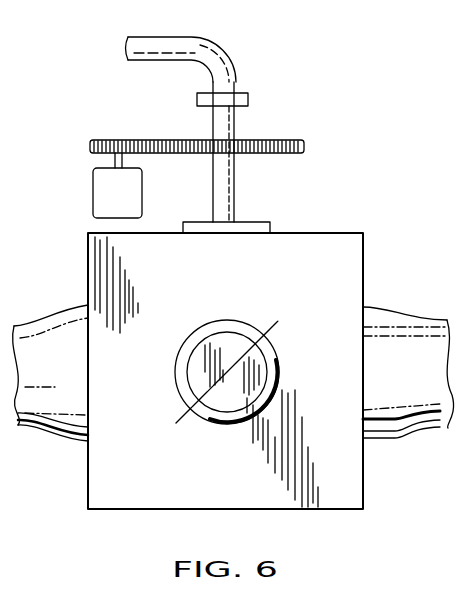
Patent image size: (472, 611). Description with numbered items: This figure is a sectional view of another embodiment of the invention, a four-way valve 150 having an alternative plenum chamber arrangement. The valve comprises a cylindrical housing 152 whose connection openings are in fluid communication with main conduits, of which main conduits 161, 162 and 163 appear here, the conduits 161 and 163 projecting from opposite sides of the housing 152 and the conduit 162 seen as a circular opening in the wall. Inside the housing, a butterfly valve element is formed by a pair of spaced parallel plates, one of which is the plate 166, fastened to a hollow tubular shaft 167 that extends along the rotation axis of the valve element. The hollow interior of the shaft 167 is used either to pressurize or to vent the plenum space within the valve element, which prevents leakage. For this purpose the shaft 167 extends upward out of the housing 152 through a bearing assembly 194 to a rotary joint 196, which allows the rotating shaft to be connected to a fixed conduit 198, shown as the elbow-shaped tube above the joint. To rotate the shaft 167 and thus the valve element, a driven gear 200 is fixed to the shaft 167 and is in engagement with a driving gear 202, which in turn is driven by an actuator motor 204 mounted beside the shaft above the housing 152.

The four-way valve 150 is at (333, 113).
The cylindrical housing 152 is at (363, 258).
The main conduit 161 is at (385, 318).
The main conduit 162 is at (262, 331).
The main conduit 163 is at (37, 328).
The parallel plate 166 is at (210, 390).
The hollow tubular shaft 167 is at (237, 124).
The bearing assembly 194 is at (270, 226).
The rotary joint 196 is at (245, 99).
The fixed conduit 198 is at (212, 55).
The driven gear 200 is at (290, 154).
The driving gear 202 is at (108, 140).
The actuator motor 204 is at (93, 196).